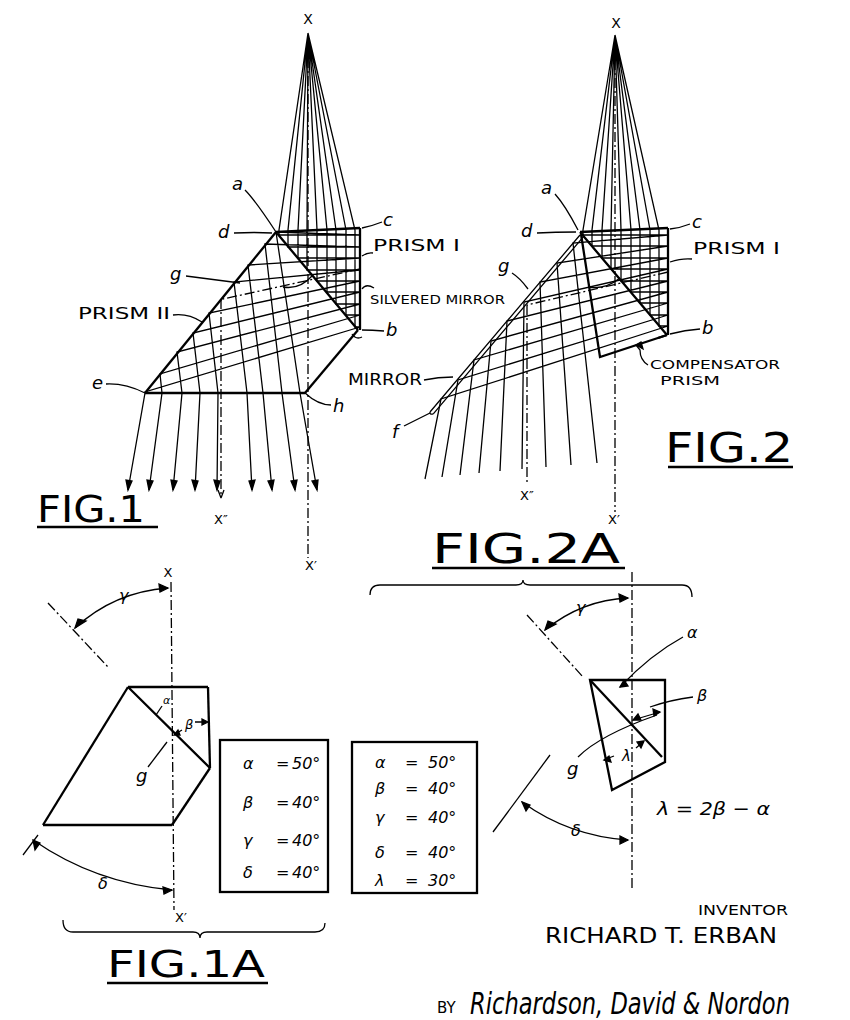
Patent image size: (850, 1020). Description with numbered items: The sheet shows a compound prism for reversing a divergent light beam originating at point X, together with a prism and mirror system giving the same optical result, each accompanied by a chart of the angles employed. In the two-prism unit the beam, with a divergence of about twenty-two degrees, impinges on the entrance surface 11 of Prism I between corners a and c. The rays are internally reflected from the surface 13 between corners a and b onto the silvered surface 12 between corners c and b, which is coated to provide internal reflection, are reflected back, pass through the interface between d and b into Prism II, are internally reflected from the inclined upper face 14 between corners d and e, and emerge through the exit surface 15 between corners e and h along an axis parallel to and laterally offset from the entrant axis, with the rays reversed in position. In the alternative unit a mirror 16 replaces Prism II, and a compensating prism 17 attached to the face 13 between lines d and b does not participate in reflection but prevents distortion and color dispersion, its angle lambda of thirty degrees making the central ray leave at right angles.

In FIG. 1, the entrance surface 11 is at (345, 226).
In FIG. 2, the entrance surface 11 is at (660, 228).
In FIG. 1A, the entrance surface 11 is at (183, 685).
In FIG. 1, the silvered surface 12 is at (362, 270).
In FIG. 2, the silvered surface 12 is at (670, 284).
In FIG. 1A, the silvered surface 12 is at (208, 703).
In FIG. 1, the interface surface 13 is at (355, 338).
In FIG. 2, the interface surface 13 is at (668, 338).
In FIG. 1A, the interface surface 13 is at (143, 707).
In FIG. 1, the inclined upper face 14 is at (256, 266).
In FIG. 1A, the inclined upper face 14 is at (93, 753).
In FIG. 1, the exit surface 15 is at (223, 395).
In FIG. 1A, the exit surface 15 is at (98, 825).
In FIG. 2, the mirror 16 is at (490, 346).
In FIG. 2, the compensating prism 17 is at (628, 355).